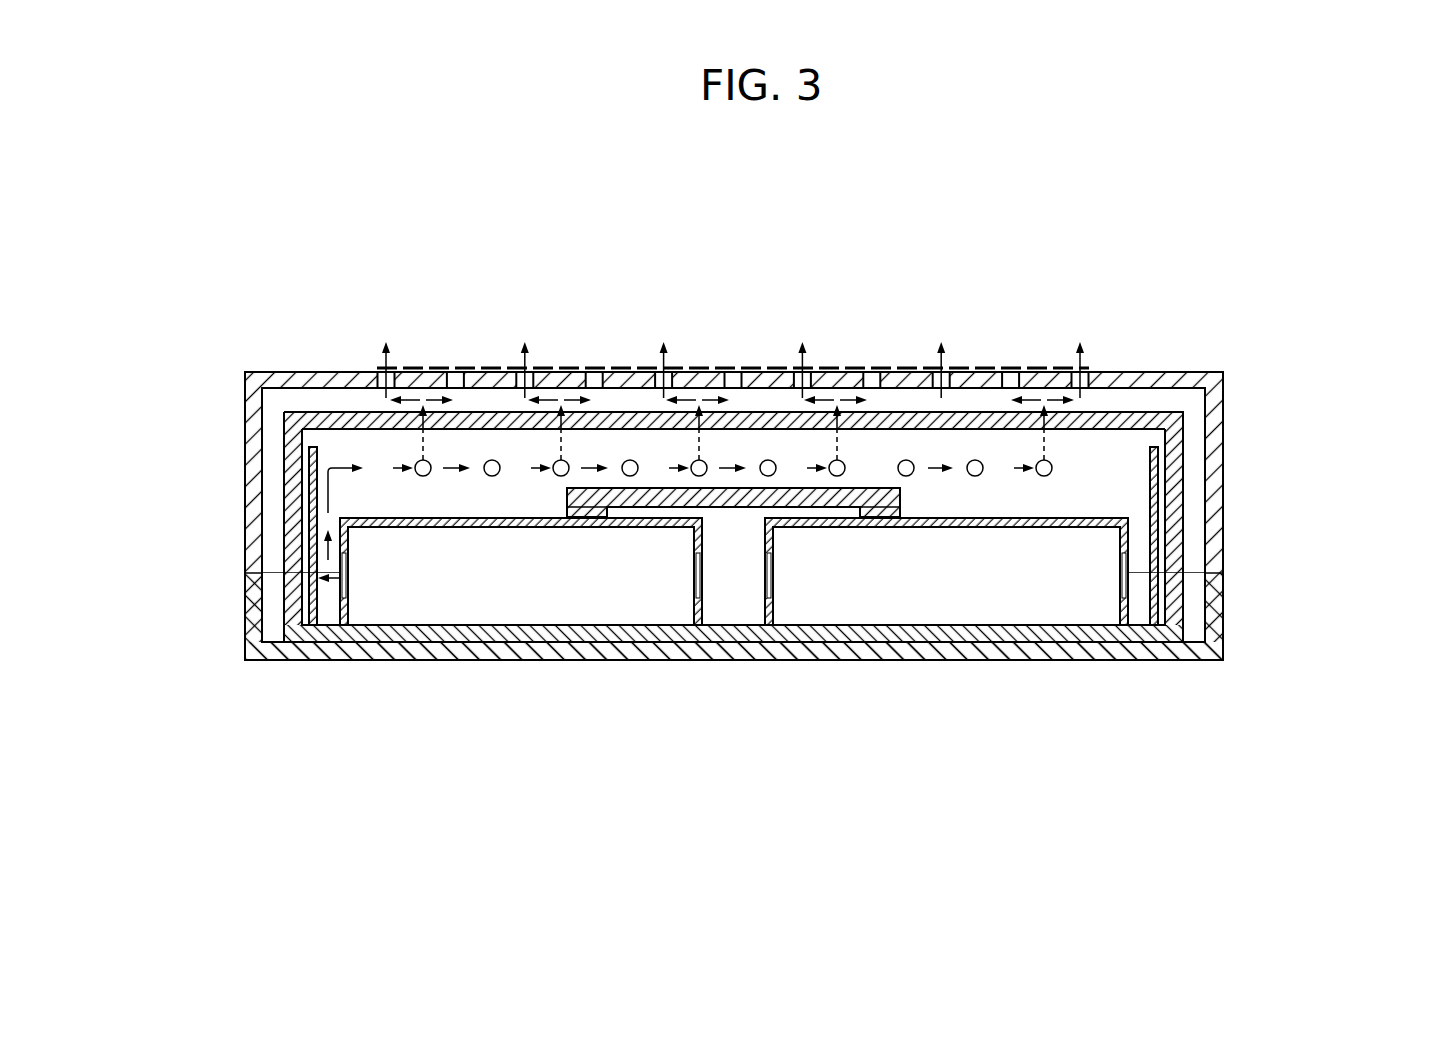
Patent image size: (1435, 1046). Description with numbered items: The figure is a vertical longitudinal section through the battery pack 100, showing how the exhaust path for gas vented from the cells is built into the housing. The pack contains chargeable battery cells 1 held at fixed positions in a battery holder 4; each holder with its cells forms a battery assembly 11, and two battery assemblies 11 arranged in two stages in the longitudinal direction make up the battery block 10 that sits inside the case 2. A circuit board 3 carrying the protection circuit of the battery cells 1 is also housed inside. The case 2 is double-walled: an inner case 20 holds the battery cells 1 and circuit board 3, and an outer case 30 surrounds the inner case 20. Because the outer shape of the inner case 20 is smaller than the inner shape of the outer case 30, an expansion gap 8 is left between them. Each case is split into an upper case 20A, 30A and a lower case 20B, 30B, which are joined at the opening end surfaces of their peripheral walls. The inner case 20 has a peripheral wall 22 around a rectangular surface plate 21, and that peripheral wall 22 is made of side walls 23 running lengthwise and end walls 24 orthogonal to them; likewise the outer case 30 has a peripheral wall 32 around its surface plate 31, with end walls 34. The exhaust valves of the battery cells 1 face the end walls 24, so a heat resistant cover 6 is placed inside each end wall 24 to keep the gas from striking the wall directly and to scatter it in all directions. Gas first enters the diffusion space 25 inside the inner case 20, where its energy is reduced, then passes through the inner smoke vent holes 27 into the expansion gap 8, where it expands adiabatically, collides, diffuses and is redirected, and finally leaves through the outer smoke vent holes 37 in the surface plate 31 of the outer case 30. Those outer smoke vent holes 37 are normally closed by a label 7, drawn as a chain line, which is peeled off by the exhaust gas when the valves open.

The battery pack 100 is at (1207, 217).
The case 2 is at (769, 519).
The inner case 20 is at (753, 527).
The upper case 20A is at (672, 501).
The lower case 20B is at (277, 607).
The end wall 34 is at (757, 501).
The peripheral wall 32 is at (757, 501).
The surface plate 31 is at (700, 380).
The outer smoke vent hole 37 is at (699, 329).
The label 7 is at (625, 368).
The expansion gap 8 is at (377, 400).
The outer case 30 is at (855, 438).
The upper case 30A is at (1265, 372).
The lower case 30B is at (1265, 575).
The surface plate 21 is at (510, 420).
The peripheral wall 22 is at (1043, 395).
The side wall 23 is at (962, 440).
The end wall 24 is at (1161, 423).
The diffusion space 25 is at (377, 449).
The inner smoke vent hole 27 is at (423, 477).
The heat resistant cover 6 is at (310, 494).
The circuit board 3 is at (728, 508).
The battery cell 1 is at (623, 587).
The battery holder 4 is at (513, 520).
The battery assembly 11 is at (734, 661).
The battery block 10 is at (734, 692).